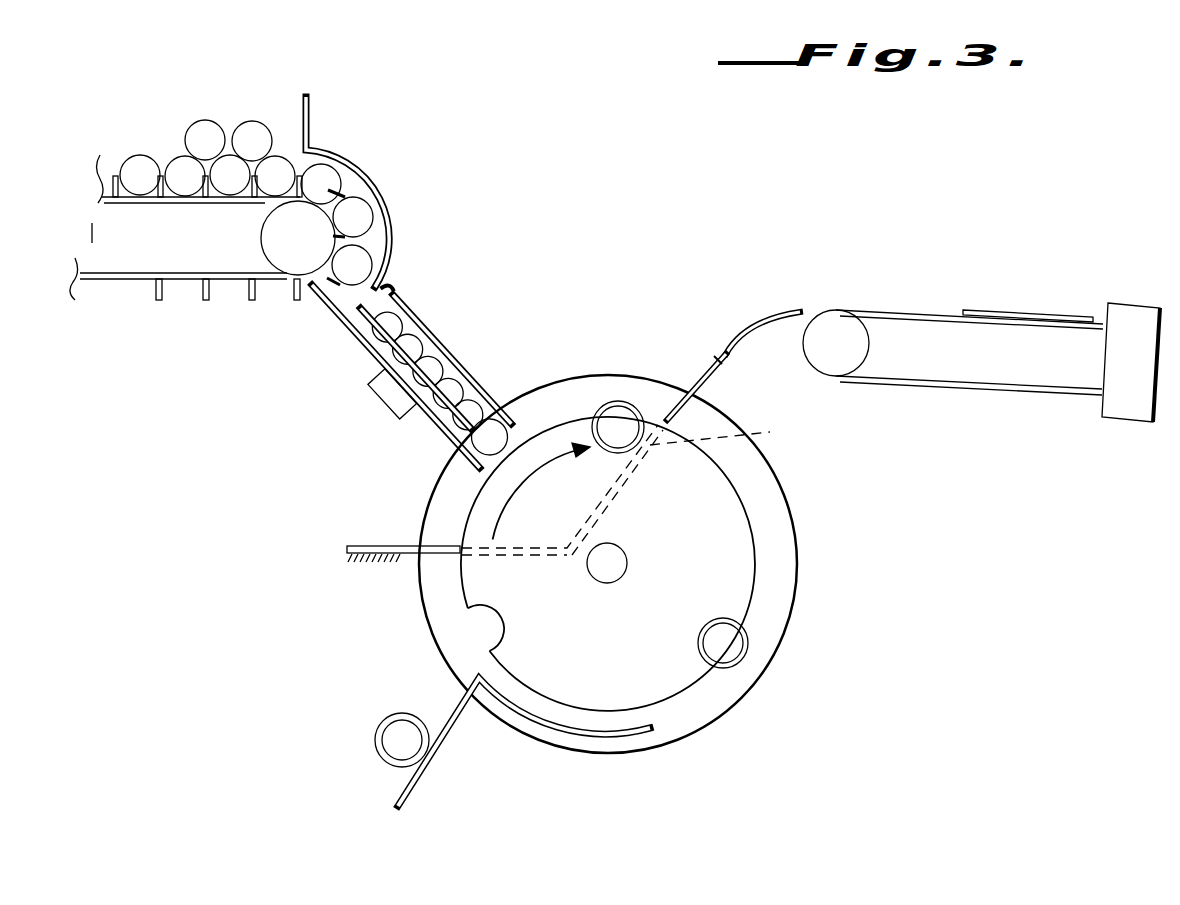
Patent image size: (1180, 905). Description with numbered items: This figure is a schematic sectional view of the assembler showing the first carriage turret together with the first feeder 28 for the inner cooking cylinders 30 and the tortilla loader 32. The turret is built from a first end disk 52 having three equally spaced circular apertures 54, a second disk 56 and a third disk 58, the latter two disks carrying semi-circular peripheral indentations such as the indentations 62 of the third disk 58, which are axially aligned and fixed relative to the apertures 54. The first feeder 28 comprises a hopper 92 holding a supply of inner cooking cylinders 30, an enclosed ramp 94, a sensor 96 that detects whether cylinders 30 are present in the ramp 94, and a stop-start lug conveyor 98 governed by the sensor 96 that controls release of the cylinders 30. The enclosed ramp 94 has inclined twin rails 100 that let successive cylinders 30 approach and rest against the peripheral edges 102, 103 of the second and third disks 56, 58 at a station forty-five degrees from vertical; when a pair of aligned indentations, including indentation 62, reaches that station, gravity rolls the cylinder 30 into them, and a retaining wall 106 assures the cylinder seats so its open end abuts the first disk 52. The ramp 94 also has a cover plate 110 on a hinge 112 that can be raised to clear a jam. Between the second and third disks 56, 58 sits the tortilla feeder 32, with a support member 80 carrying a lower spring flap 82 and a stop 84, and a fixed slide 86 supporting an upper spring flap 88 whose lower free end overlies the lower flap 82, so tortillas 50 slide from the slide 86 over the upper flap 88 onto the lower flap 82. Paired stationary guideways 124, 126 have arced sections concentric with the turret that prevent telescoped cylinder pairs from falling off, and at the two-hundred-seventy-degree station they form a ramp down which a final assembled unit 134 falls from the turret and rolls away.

The first feeder 28 is at (412, 181).
The inner cooking cylinder 30 is at (1133, 410).
The tortilla loader 32 is at (645, 481).
The tortilla 50 is at (1092, 287).
The first end disk 52 is at (780, 645).
The circular aperture 54 is at (677, 516).
The second disk 56 is at (605, 398).
The third disk 58 is at (740, 598).
The semi-circular peripheral indentation 62 is at (629, 516).
The support member 80 is at (356, 561).
The lower spring flap 82 is at (643, 487).
The stop 84 is at (592, 520).
The fixed slide 86 is at (788, 313).
The upper spring flap 88 is at (707, 363).
The hopper 92 is at (138, 157).
The enclosed ramp 94 is at (430, 362).
The sensor 96 is at (392, 394).
The stop-start lug conveyor 98 is at (233, 280).
The twin rails 100 is at (396, 376).
The peripheral edge 102 is at (326, 523).
The peripheral edge 103 is at (374, 558).
The retaining wall 106 is at (447, 355).
The cover plate 110 is at (416, 368).
The hinge 112 is at (500, 405).
The guideway 124 is at (524, 769).
The guideway 126 is at (427, 773).
The final assembled unit 134 is at (377, 735).